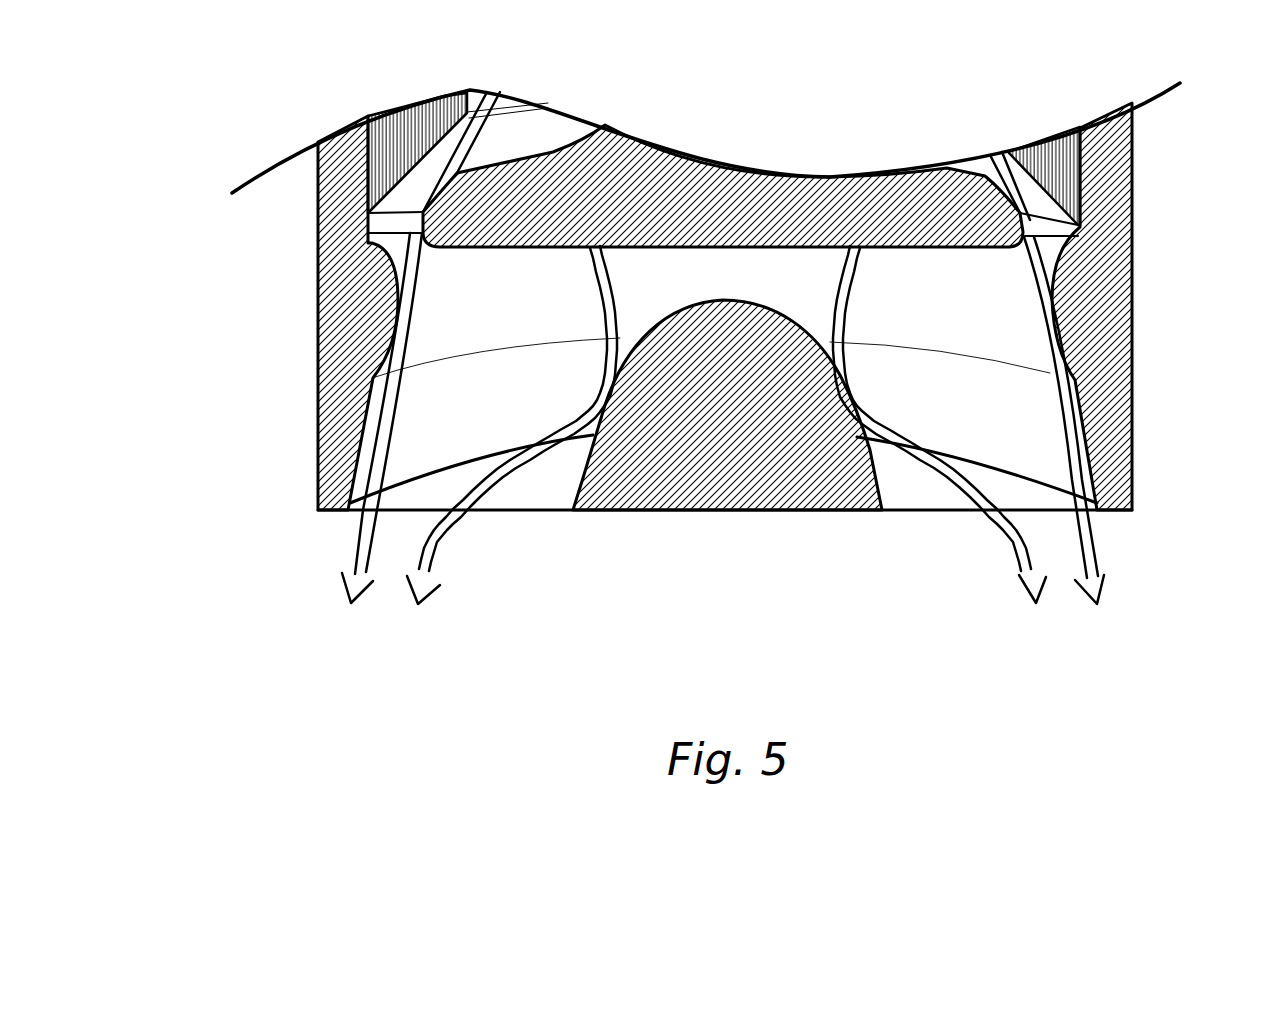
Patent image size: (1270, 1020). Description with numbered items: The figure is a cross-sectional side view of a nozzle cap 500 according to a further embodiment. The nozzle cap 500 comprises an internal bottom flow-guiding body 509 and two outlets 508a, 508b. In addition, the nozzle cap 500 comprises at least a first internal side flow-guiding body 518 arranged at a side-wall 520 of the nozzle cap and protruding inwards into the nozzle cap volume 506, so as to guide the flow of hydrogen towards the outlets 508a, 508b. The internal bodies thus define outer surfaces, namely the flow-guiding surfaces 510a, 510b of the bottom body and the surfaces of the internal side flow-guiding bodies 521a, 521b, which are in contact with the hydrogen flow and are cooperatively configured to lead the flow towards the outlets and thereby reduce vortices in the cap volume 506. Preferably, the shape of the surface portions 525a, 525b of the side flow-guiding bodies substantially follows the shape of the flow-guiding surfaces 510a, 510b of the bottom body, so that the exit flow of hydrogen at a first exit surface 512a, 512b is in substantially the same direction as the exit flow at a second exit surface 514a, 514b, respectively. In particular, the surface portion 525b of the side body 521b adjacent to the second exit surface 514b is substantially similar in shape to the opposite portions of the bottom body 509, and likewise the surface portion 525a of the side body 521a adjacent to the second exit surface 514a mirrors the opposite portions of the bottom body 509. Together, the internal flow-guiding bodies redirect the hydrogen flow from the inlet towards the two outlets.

The nozzle cap 500 is at (266, 606).
The nozzle cap volume 506 is at (937, 415).
The outlet 508a is at (951, 502).
The outlet 508b is at (522, 500).
The internal bottom flow-guiding body 509 is at (710, 347).
The flow-guiding surface 510a is at (838, 360).
The flow-guiding surface 510b is at (612, 352).
The first exit surface 512a is at (880, 481).
The first exit surface 512b is at (578, 482).
The second exit surface 514a is at (1088, 498).
The second exit surface 514b is at (362, 482).
The first internal side flow-guiding body 518 is at (385, 318).
The side-wall 520 is at (1104, 428).
The internal side flow-guiding body 521a is at (1060, 258).
The internal side flow-guiding body 521b is at (395, 263).
The surface portion 525a is at (1046, 385).
The surface portion 525b is at (399, 378).